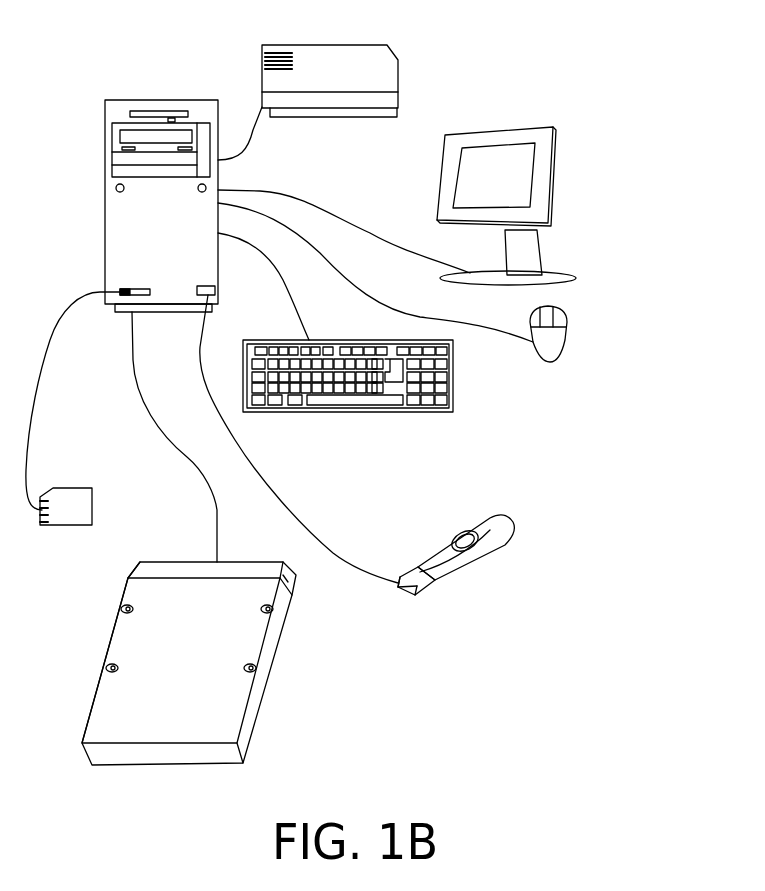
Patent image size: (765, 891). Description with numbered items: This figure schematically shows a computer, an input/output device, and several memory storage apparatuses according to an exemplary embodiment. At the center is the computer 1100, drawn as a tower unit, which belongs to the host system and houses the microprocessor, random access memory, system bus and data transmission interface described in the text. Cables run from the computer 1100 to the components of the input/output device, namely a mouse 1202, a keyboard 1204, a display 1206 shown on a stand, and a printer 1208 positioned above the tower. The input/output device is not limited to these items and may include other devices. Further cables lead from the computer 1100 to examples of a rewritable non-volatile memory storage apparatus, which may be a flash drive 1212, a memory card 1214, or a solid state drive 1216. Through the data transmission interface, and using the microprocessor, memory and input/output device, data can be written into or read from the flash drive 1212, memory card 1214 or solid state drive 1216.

The computer 1100 is at (162, 100).
The mouse 1202 is at (565, 338).
The keyboard 1204 is at (458, 387).
The display 1206 is at (507, 125).
The printer 1208 is at (325, 45).
The flash drive 1212 is at (452, 543).
The memory card 1214 is at (92, 498).
The solid state drive 1216 is at (239, 548).